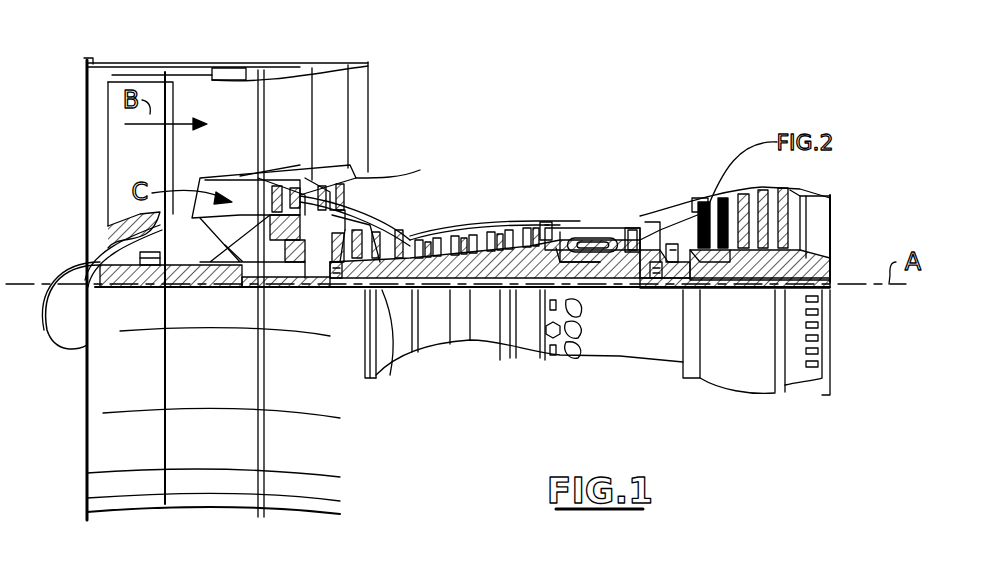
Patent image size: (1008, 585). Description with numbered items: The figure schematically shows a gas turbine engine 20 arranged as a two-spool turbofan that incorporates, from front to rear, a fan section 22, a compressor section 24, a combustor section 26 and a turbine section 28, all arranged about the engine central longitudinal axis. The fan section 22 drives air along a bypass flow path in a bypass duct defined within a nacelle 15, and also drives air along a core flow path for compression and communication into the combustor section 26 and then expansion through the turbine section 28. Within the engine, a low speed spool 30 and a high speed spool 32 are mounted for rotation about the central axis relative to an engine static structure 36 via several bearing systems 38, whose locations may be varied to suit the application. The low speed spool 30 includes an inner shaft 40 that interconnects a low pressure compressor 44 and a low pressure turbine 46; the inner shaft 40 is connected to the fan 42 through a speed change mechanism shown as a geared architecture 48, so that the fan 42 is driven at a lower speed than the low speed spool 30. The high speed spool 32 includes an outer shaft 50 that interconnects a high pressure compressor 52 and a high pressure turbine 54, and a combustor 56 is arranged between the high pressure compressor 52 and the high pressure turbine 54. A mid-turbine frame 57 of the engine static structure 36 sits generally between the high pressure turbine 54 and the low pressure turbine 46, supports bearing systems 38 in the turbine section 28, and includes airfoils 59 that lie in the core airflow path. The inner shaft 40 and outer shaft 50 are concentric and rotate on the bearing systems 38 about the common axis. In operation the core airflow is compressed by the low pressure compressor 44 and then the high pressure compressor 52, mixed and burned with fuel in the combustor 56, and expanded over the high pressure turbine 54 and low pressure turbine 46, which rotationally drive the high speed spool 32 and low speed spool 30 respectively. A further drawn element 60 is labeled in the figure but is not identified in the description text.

The nacelle 15 is at (232, 68).
The gas turbine engine 20 is at (590, 108).
The fan section 22 is at (170, 50).
The compressor section 24 is at (406, 206).
The combustor section 26 is at (581, 195).
The turbine section 28 is at (709, 153).
The low speed spool 30 is at (491, 302).
The high speed spool 32 is at (527, 228).
The engine static structure 36 is at (524, 362).
The bearing systems 38 is at (336, 280).
The inner shaft 40 is at (389, 340).
The fan 42 is at (128, 165).
The low pressure compressor 44 is at (322, 205).
The low pressure turbine 46 is at (733, 190).
The geared architecture 48 is at (236, 268).
The outer shaft 50 is at (596, 286).
The high pressure compressor 52 is at (476, 242).
The high pressure turbine 54 is at (633, 222).
The combustor 56 is at (589, 236).
The mid-turbine frame 57 is at (678, 203).
The airfoils 59 is at (694, 256).
The vane 60 is at (701, 186).